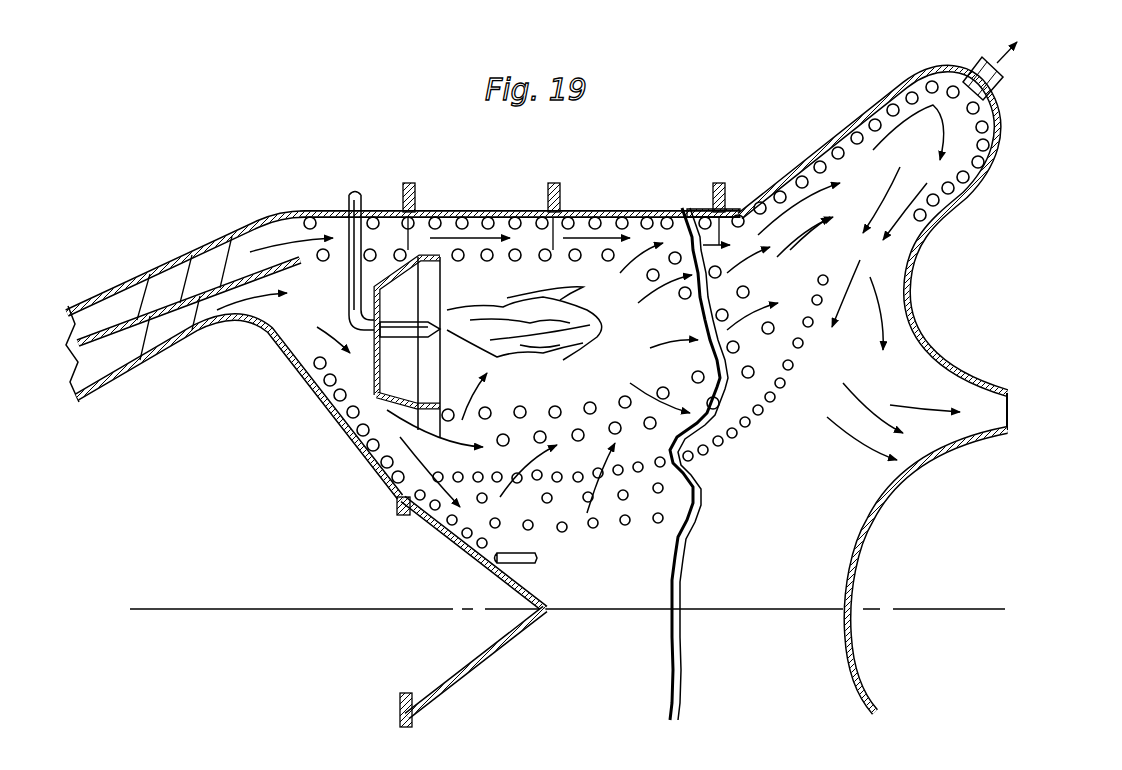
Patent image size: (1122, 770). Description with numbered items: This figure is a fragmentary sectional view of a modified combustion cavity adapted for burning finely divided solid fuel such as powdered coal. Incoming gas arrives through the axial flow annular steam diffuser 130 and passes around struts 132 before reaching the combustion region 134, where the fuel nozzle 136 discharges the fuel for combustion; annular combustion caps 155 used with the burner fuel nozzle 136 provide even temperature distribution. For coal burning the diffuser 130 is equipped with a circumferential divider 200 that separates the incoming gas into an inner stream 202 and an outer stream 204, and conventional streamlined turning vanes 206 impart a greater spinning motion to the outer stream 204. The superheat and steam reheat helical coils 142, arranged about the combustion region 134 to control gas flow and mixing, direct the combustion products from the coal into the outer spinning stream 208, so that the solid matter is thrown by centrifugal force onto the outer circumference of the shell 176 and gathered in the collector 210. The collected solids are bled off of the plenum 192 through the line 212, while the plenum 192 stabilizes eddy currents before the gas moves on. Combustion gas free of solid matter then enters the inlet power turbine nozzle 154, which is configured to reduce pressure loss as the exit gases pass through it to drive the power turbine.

The axial flow annular steam diffuser 130 is at (90, 367).
The struts 132 is at (143, 340).
The combustion region 134 is at (500, 323).
The fuel nozzle 136 is at (407, 322).
The superheat and steam reheat helical coils 142 is at (673, 243).
The inlet power turbine nozzle 154 is at (977, 412).
The annular combustion caps 155 is at (367, 368).
The shell 176 is at (740, 212).
The plenum 192 is at (830, 525).
The circumferential divider 200 is at (93, 337).
The inner stream 202 is at (203, 313).
The outer stream 204 is at (165, 290).
The streamlined turning vanes 206 is at (212, 262).
The outer spinning stream 208 is at (628, 212).
The collector 210 is at (850, 128).
The line 212 is at (977, 68).